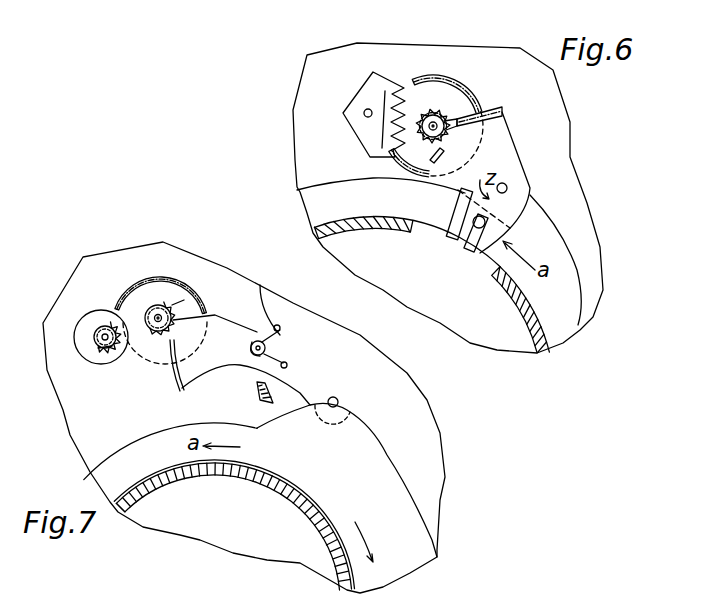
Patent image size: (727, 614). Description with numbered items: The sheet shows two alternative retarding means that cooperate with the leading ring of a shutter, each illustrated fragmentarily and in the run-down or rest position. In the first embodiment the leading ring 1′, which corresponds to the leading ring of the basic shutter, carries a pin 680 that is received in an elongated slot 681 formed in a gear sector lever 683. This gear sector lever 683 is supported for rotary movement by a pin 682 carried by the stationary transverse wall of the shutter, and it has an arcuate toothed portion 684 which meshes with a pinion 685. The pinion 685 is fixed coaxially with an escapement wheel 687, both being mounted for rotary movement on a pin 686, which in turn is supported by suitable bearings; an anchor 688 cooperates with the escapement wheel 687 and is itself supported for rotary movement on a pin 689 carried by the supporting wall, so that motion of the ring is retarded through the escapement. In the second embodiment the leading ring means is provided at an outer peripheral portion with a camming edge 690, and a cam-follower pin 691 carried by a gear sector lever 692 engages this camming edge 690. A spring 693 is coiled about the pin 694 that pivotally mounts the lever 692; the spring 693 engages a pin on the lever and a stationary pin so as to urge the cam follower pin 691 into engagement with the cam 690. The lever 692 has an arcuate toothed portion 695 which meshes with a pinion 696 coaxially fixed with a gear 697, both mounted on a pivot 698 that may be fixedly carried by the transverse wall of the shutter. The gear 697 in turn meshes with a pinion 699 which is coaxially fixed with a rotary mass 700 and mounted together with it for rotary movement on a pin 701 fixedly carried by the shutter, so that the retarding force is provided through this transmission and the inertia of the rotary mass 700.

In FIG. 6, the leading ring 1′ is at (337, 188).
In FIG. 6, the pin 680 is at (455, 243).
In FIG. 6, the elongated slot 681 is at (482, 233).
In FIG. 6, the pin 682 is at (507, 187).
In FIG. 6, the gear sector lever 683 is at (508, 205).
In FIG. 6, the arcuate toothed portion 684 is at (488, 110).
In FIG. 6, the pinion 685 is at (428, 110).
In FIG. 6, the pin 686 is at (448, 128).
In FIG. 6, the escapement wheel 687 is at (440, 77).
In FIG. 6, the anchor 688 is at (370, 88).
In FIG. 6, the pin 689 is at (364, 114).
In FIG. 7, the camming edge 690 is at (285, 407).
In FIG. 7, the pin 691 is at (338, 400).
In FIG. 7, the gear sector lever 692 is at (230, 313).
In FIG. 7, the spring 693 is at (275, 297).
In FIG. 7, the pin 694 is at (267, 347).
In FIG. 7, the arcuate toothed portion 695 is at (167, 365).
In FIG. 7, the pinion 696 is at (170, 302).
In FIG. 7, the gear 697 is at (127, 282).
In FIG. 7, the pivot 698 is at (157, 310).
In FIG. 7, the pinion 699 is at (97, 350).
In FIG. 7, the rotary mass 700 is at (102, 308).
In FIG. 7, the pin 701 is at (103, 336).